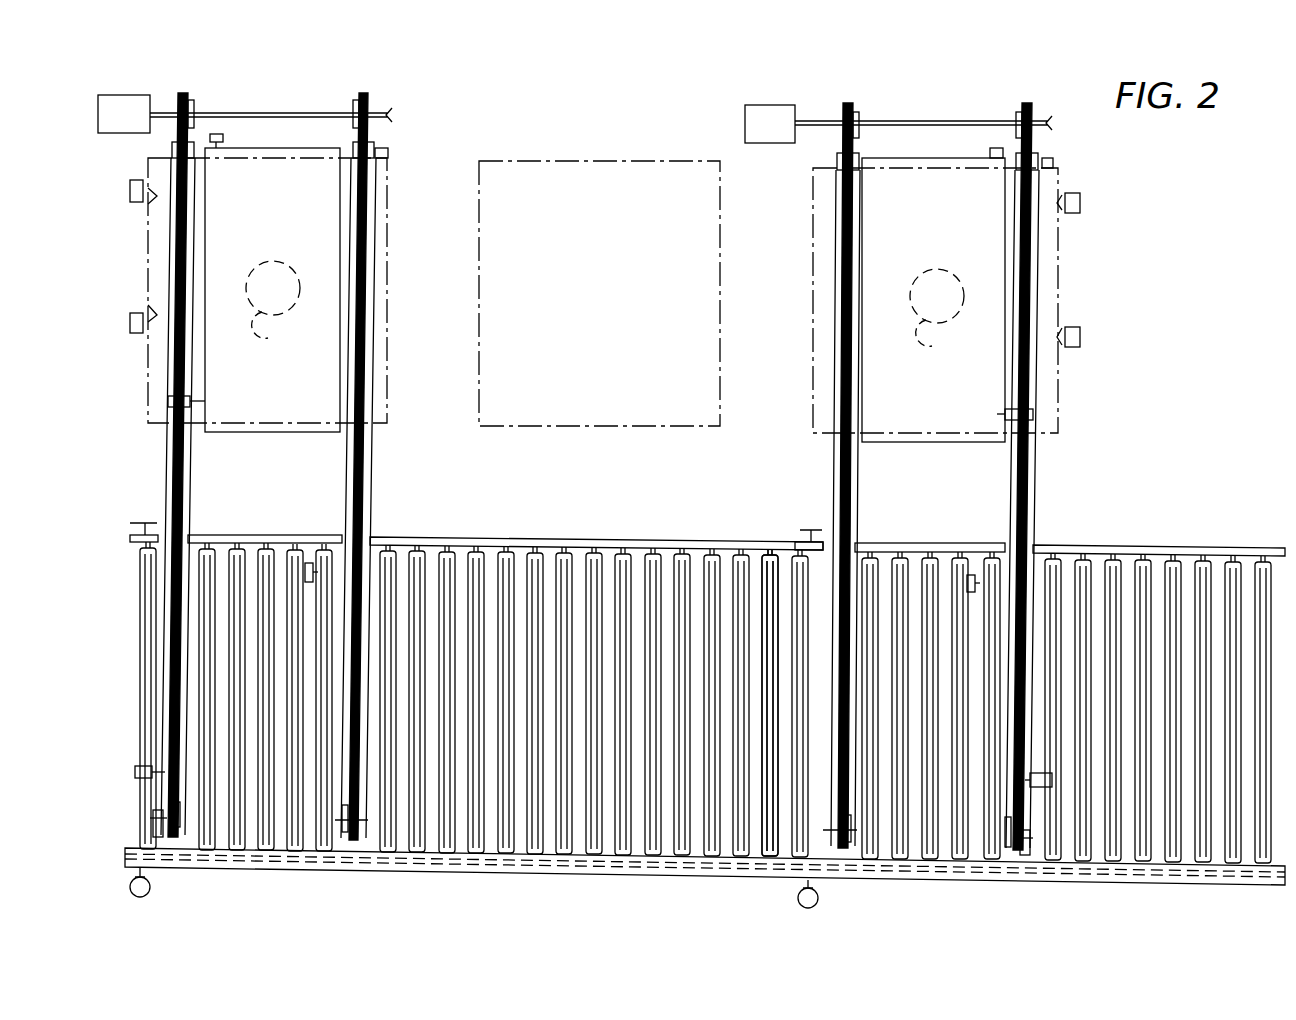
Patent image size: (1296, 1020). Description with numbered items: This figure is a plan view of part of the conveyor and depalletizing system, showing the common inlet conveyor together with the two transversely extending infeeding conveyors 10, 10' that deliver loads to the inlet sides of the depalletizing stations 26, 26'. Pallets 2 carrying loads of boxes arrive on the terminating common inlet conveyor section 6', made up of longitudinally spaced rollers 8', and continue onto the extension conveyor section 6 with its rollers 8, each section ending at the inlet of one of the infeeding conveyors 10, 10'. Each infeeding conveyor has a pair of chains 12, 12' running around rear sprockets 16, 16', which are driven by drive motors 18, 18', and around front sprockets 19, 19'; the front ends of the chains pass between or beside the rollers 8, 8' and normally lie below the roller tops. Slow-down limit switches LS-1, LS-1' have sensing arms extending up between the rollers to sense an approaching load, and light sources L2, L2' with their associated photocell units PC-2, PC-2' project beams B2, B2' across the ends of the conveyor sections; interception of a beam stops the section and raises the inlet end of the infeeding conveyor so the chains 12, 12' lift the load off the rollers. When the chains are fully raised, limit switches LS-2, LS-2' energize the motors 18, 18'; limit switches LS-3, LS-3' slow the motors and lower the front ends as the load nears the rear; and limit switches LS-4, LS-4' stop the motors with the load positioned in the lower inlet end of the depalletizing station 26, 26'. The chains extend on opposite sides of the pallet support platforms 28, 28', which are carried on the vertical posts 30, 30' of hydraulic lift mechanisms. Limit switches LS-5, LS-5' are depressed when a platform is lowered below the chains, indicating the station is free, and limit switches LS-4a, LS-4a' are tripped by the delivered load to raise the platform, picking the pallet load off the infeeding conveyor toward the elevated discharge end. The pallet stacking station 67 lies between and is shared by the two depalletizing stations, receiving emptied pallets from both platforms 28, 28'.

The pallet 2 is at (148, 403).
The extension conveyor section 6 is at (505, 519).
The terminating common inlet conveyor section 6' is at (1070, 518).
The rollers 8 is at (462, 678).
The rollers 8' is at (1066, 685).
The infeeding conveyor 10 is at (130, 535).
The infeeding conveyor 10' is at (795, 540).
The chains 12 is at (235, 466).
The chains 12' is at (901, 476).
The rear sprockets 16 is at (273, 100).
The rear sprockets 16' is at (937, 108).
The drive motor 18 is at (126, 92).
The drive motor 18' is at (770, 101).
The front sprockets 19 is at (270, 852).
The front sprockets 19' is at (917, 862).
The depalletizing station 26 is at (236, 290).
The depalletizing station 26' is at (901, 300).
The pallet support platform 28 is at (272, 310).
The pallet support platform 28' is at (933, 319).
The vertical post 30 is at (273, 314).
The vertical post 30' is at (937, 320).
The pallet stacking station 67 is at (590, 150).
The conveyor section slow down limit switch LS-1 is at (278, 542).
The conveyor section slow down limit switch LS-1' is at (983, 544).
The limit switch LS-2 is at (192, 854).
The limit switch LS-2' is at (1008, 869).
The limit switch LS-3 is at (102, 326).
The limit switch LS-3' is at (1111, 340).
The limit switch LS-4 is at (117, 173).
The limit switch LS-4' is at (1108, 207).
The limit switch LS-4a is at (341, 144).
The limit switch LS-4a' is at (1066, 159).
The limit switch LS-5 is at (128, 725).
The limit switch LS-5' is at (1065, 841).
The photocell PC-2 is at (113, 528).
The photocell PC-2' is at (788, 521).
The photocell unit B2 is at (122, 695).
The photocell unit B2' is at (758, 684).
The light source L2 is at (152, 882).
The light source L2' is at (775, 894).